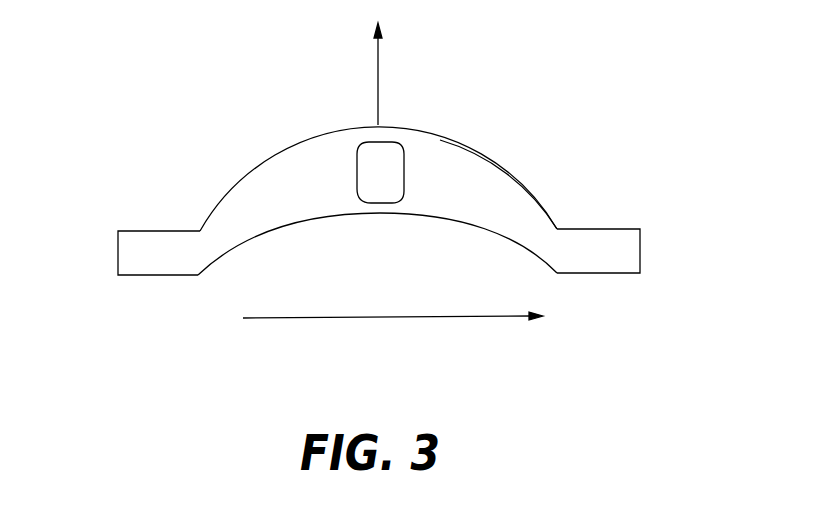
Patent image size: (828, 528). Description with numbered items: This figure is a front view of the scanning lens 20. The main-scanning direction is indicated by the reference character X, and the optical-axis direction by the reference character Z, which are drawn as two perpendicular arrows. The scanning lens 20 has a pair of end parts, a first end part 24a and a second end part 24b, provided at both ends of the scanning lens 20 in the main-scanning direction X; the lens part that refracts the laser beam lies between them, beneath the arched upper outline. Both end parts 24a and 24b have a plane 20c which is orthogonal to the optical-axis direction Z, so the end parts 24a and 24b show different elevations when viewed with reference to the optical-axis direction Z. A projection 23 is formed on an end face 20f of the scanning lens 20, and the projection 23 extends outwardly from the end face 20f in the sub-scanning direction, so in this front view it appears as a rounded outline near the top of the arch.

The scanning lens 20 is at (375, 226).
The plane 20c is at (118, 230).
The end face 20f is at (495, 182).
The projection 23 is at (388, 152).
The first end part 24a is at (600, 198).
The second end part 24b is at (150, 203).
The optical-axis direction Z is at (378, 75).
The main-scanning direction X is at (356, 318).